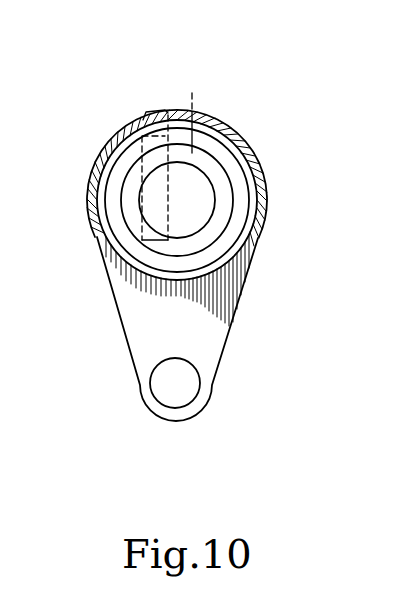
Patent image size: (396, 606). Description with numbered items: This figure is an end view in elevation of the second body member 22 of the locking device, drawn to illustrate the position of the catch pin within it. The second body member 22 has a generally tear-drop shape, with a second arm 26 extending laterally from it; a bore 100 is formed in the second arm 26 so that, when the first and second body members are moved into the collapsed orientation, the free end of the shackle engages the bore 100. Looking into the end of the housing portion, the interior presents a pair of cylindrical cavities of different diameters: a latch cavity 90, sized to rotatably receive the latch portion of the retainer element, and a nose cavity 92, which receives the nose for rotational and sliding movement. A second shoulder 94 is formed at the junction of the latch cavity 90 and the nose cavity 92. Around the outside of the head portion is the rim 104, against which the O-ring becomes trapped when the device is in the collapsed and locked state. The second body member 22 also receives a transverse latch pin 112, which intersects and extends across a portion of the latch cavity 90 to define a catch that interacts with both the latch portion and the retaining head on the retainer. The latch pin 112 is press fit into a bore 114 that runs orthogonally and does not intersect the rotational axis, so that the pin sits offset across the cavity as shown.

The second body member 22 is at (112, 113).
The second arm 26 is at (215, 330).
The latch cavity 90 is at (207, 208).
The nose cavity 92 is at (217, 172).
The second shoulder 94 is at (168, 147).
The bore 100 is at (177, 389).
The rim 104 is at (242, 192).
The latch pin 112 is at (150, 199).
The bore 114 is at (192, 93).